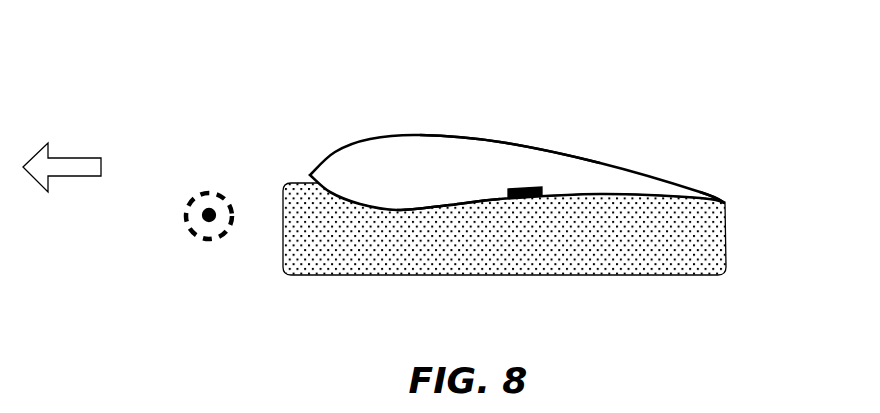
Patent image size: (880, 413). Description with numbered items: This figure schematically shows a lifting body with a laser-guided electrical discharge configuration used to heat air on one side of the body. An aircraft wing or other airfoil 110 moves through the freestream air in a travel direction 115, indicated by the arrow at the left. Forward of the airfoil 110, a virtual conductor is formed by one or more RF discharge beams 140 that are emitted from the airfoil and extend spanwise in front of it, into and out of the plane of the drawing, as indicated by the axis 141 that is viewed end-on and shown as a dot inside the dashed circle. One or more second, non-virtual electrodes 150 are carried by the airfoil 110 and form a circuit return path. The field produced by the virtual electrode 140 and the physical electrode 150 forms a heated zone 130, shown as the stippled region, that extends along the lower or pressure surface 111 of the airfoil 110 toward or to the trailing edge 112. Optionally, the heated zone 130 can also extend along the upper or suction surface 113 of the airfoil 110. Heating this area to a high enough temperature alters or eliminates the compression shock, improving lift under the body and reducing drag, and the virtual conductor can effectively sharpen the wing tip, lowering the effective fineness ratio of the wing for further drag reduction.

The airfoil 110 is at (326, 150).
The lower surface 111 is at (427, 208).
The trailing edge 112 is at (725, 203).
The upper surface 113 is at (474, 137).
The travel direction 115 is at (70, 157).
The heated zone 130 is at (319, 276).
The RF discharge beam 140 is at (184, 222).
The axis 141 is at (205, 193).
The second electrode 150 is at (525, 198).